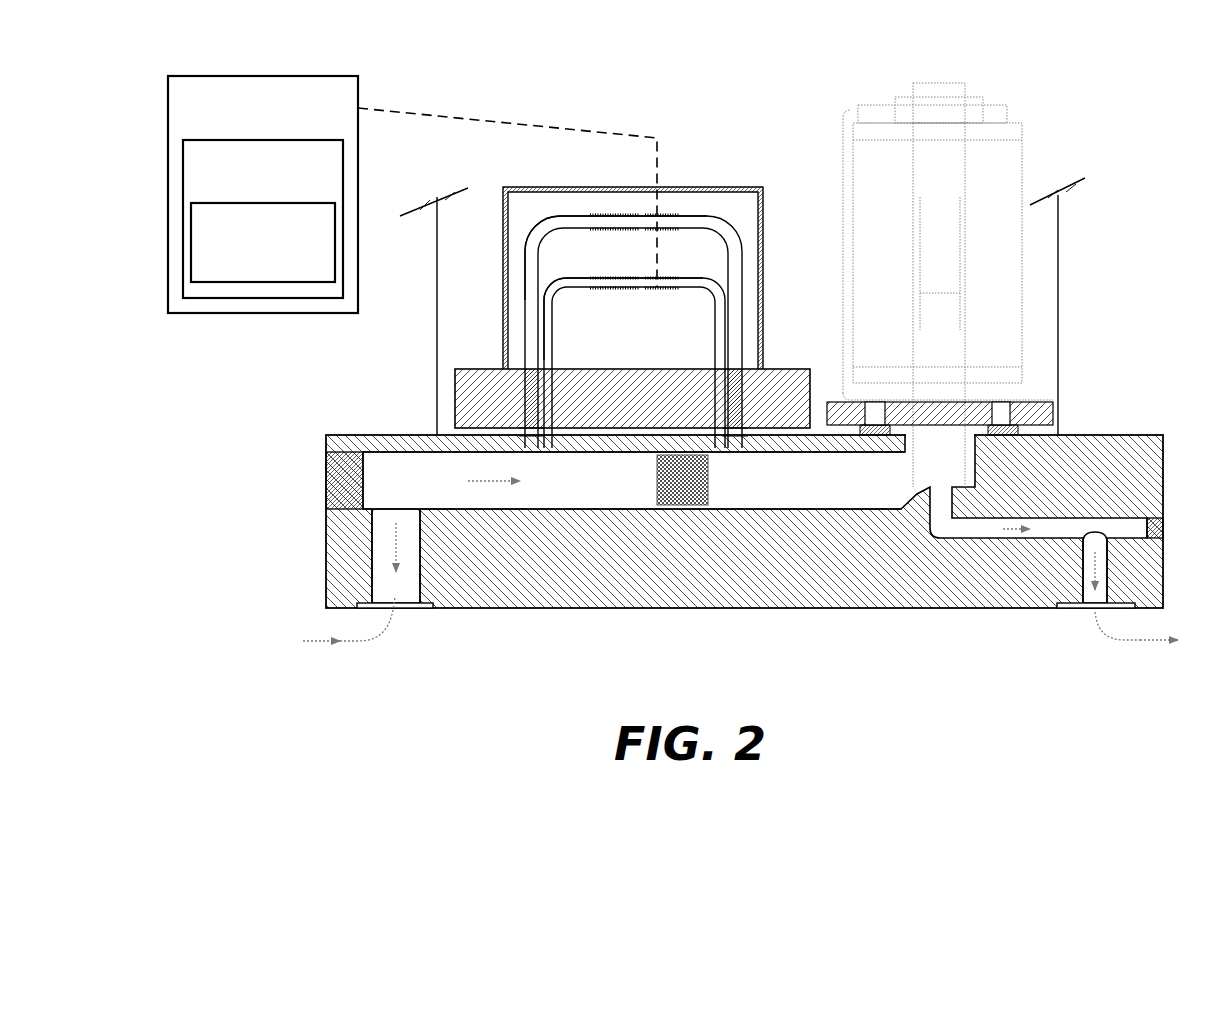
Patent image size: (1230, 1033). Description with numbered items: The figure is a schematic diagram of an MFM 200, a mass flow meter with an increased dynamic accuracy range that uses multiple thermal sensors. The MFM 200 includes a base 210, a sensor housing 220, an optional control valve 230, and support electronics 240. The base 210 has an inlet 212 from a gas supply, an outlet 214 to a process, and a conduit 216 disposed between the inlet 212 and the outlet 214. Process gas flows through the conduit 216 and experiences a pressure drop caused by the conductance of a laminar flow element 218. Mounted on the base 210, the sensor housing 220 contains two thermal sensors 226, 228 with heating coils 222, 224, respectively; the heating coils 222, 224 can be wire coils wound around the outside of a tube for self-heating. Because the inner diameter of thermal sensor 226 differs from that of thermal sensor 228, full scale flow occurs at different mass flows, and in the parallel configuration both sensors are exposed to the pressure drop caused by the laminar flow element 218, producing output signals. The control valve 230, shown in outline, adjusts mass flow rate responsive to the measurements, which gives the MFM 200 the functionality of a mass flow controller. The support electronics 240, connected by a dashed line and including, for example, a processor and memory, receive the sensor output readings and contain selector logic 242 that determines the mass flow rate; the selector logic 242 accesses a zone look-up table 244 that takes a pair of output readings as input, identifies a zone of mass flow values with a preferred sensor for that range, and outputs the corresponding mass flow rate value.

The MFM 200 is at (1043, 24).
The base 210 is at (787, 612).
The inlet 212 is at (418, 612).
The outlet 214 is at (1072, 613).
The conduit 216 is at (417, 485).
The laminar flow element 218 is at (684, 517).
The sensor housing 220 is at (502, 195).
The heating coil 222 is at (607, 299).
The heating coil 224 is at (600, 236).
The thermal sensor 226 is at (623, 319).
The thermal sensor 228 is at (616, 258).
The control valve 230 is at (826, 159).
The support electronics 240 is at (249, 131).
The selector logic 242 is at (249, 193).
The zone look-up table 244 is at (249, 276).